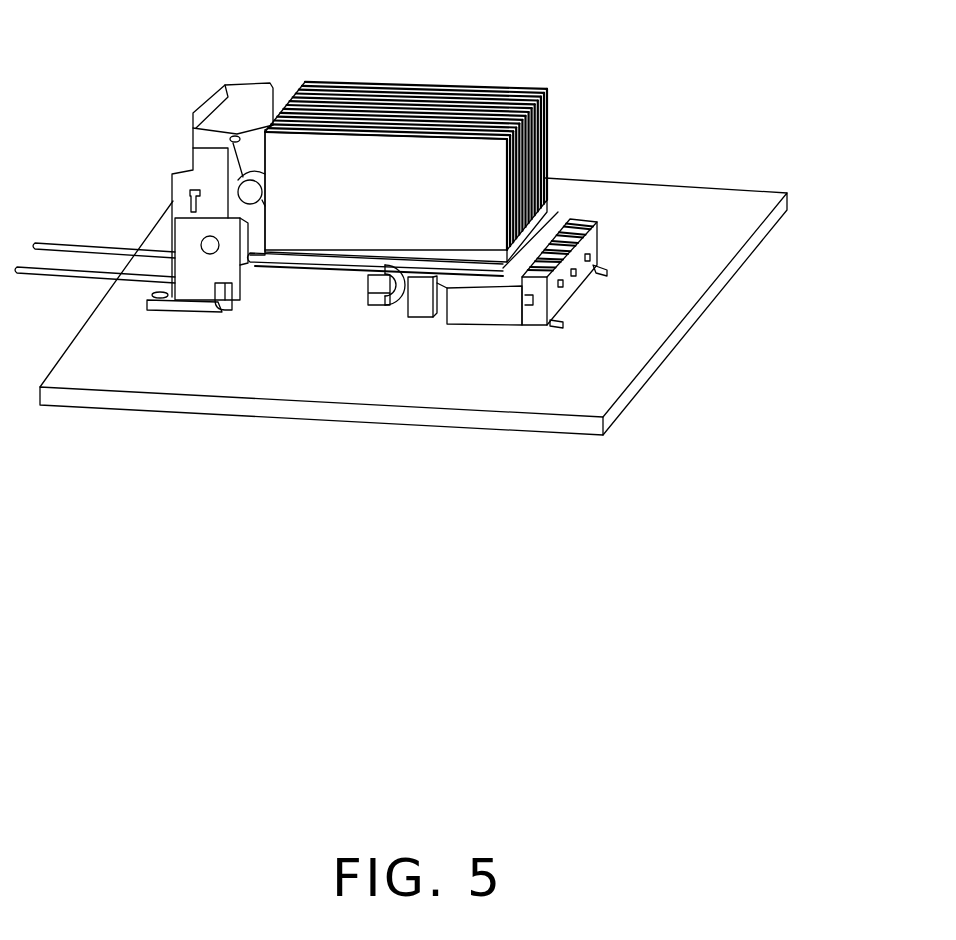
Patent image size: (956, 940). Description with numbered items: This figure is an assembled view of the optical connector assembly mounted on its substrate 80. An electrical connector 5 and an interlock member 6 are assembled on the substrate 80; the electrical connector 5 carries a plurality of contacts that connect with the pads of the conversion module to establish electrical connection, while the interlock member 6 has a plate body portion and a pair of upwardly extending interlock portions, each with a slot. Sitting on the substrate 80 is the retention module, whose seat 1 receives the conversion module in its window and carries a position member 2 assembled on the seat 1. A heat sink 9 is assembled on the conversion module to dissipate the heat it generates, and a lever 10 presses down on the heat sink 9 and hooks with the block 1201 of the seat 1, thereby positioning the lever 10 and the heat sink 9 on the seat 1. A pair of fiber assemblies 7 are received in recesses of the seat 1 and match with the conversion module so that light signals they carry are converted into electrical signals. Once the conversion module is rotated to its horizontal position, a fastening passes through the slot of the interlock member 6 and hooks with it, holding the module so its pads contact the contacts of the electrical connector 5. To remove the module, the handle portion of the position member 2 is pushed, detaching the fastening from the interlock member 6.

The seat 1 is at (422, 302).
The block 1201 is at (368, 308).
The position member 2 is at (243, 100).
The electrical connector 5 is at (573, 282).
The interlock member 6 is at (160, 295).
The fiber assemblies 7 is at (100, 245).
The heat sink 9 is at (428, 100).
The lever 10 is at (290, 258).
The substrate 80 is at (673, 233).